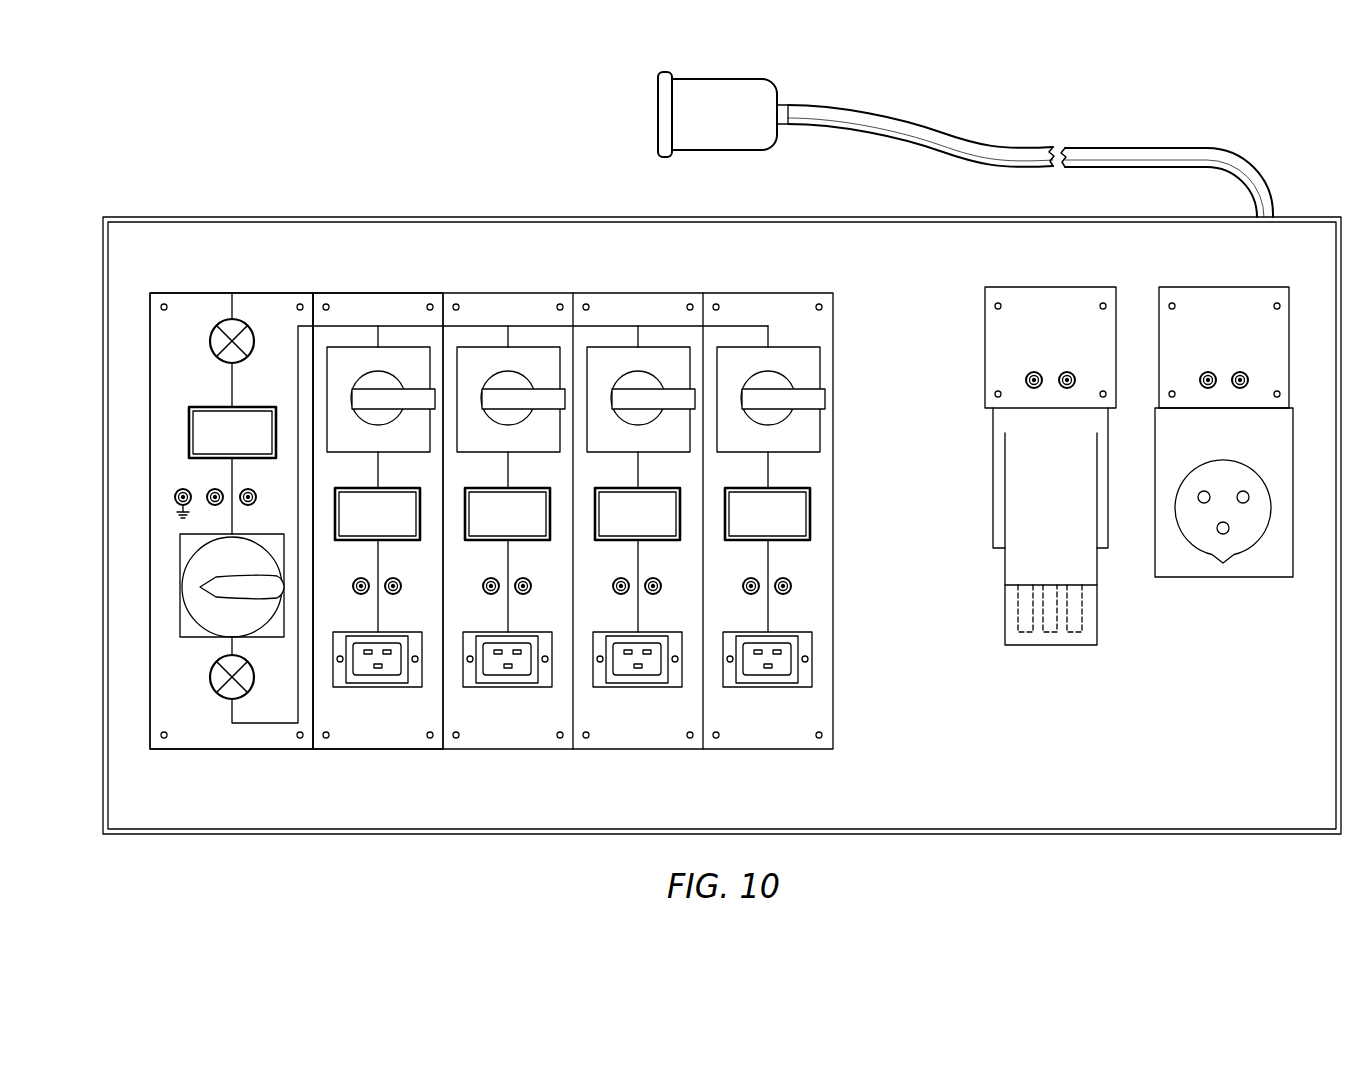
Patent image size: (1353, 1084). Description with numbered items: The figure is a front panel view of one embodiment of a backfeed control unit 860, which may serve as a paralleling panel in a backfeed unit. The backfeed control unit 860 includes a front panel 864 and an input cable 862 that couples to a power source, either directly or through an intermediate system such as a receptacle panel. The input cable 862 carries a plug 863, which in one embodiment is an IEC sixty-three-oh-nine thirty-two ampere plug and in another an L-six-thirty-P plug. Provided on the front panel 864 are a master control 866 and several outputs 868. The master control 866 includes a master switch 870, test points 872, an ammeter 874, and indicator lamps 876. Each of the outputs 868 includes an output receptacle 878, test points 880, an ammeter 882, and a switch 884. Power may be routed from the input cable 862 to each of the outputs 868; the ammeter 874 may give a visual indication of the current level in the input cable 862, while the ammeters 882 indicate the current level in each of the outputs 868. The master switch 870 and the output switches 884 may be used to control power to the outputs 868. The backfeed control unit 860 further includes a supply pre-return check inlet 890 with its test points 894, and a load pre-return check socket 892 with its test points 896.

The backfeed control unit 860 is at (166, 177).
The input cable 862 is at (833, 118).
The plug 863 is at (718, 143).
The front panel 864 is at (707, 255).
The master control 866 is at (239, 745).
The outputs 868 is at (345, 770).
The master switch 870 is at (186, 607).
The test points 872 is at (210, 494).
The ammeter 874 is at (257, 406).
The indicator lamps 876 is at (226, 318).
The output receptacle 878 is at (397, 668).
The test points 880 is at (400, 578).
The ammeter 882 is at (405, 488).
The switch 884 is at (373, 375).
The supply pre-return check inlet 890 is at (1032, 580).
The load pre-return check socket 892 is at (1243, 553).
The test points 894 is at (1026, 380).
The test points 896 is at (1250, 380).